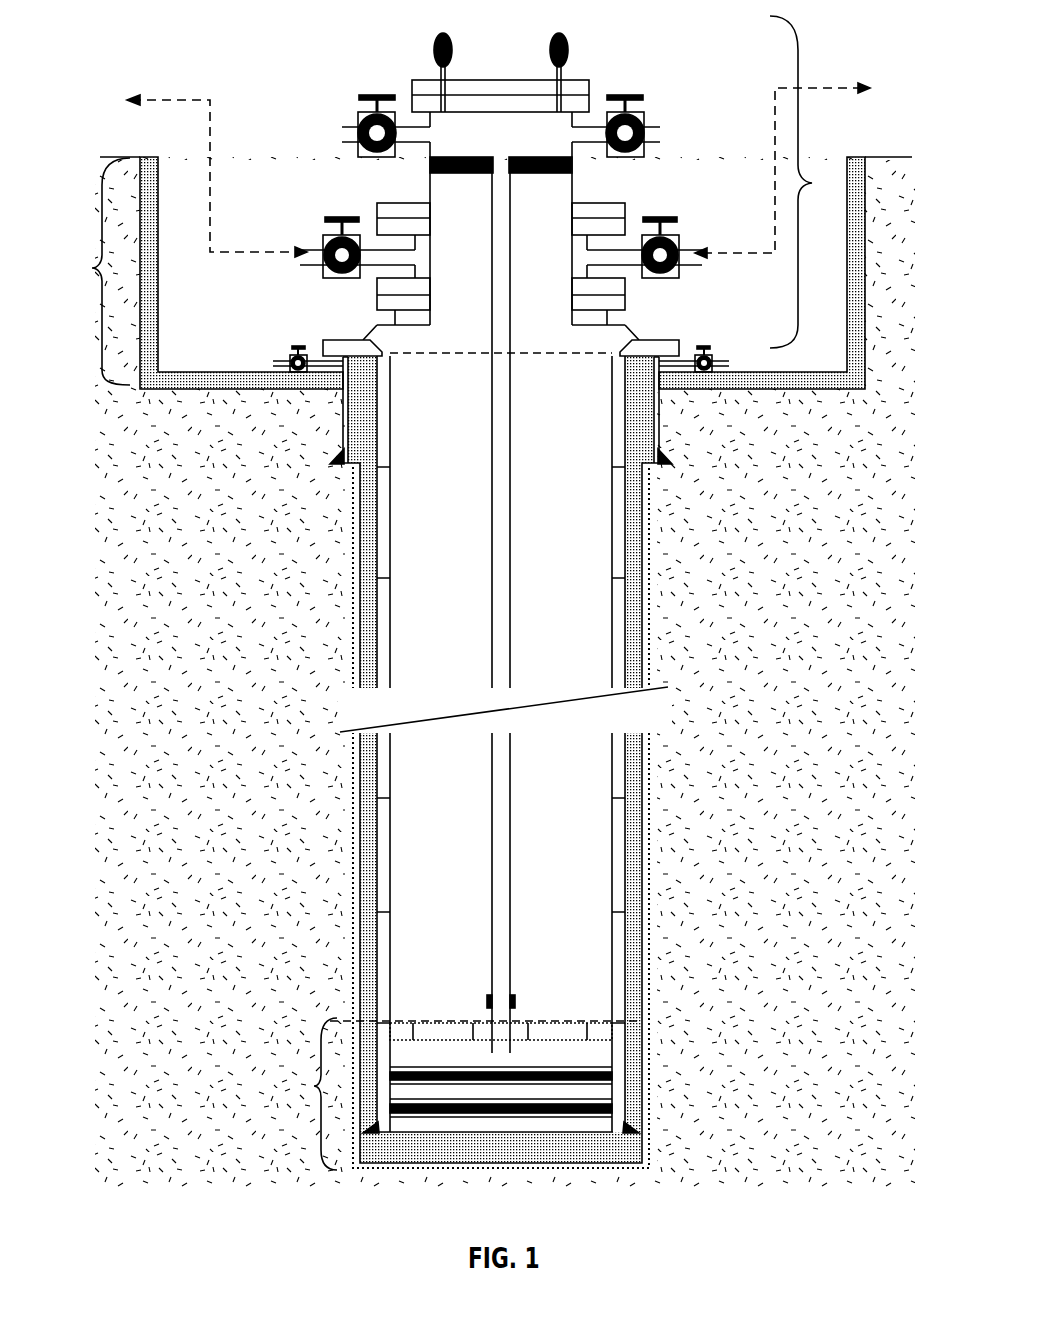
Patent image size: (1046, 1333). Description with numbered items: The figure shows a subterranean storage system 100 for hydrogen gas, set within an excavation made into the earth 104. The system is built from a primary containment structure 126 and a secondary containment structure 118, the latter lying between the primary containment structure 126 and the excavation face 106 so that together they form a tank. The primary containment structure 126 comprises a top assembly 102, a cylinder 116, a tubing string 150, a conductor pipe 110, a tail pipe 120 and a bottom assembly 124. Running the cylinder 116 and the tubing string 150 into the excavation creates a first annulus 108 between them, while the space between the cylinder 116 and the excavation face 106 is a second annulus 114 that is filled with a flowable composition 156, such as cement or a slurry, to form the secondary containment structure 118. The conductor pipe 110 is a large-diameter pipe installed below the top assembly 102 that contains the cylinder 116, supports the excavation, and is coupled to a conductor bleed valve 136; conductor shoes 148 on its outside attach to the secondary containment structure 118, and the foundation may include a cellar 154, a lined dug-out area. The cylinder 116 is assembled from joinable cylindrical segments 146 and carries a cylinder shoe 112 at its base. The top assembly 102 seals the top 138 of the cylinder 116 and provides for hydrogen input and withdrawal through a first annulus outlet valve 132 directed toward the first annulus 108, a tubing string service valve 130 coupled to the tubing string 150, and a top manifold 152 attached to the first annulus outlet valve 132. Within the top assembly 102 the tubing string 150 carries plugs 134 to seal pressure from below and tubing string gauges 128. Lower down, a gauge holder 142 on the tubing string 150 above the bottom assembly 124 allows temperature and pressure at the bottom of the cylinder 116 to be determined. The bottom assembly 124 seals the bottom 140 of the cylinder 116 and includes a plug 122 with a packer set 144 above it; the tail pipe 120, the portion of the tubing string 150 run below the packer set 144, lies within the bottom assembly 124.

The subterranean storage system 100 is at (866, 58).
The top assembly 102 is at (812, 183).
The earth 104 is at (860, 550).
The excavation face 106 is at (650, 620).
The first annulus 108 is at (460, 638).
The conductor pipe 110 is at (342, 415).
The cylinder shoe 112 is at (366, 1135).
The second annulus 114 is at (633, 830).
The cylinder 116 is at (655, 538).
The secondary containment structure 118 is at (625, 496).
The tail pipe 120 is at (520, 1049).
The plug 122 is at (613, 1107).
The bottom assembly 124 is at (314, 1086).
The primary containment structure 126 is at (370, 648).
The tubing string gauges 128 is at (433, 45).
The tubing string service valve 130 is at (363, 112).
The first annulus outlet valve 132 is at (330, 230).
The plugs 134 is at (455, 174).
The conductor bleed valve 136 is at (297, 343).
The top 138 is at (438, 354).
The bottom 140 is at (331, 1010).
The gauge holder 142 is at (515, 997).
The packer set 144 is at (582, 1030).
The joinable cylindrical segments 146 is at (385, 498).
The conductor shoes 148 is at (336, 463).
The tubing string 150 is at (497, 509).
The top manifold 152 is at (233, 200).
The cellar 154 is at (92, 268).
The flowable composition 156 is at (505, 1148).